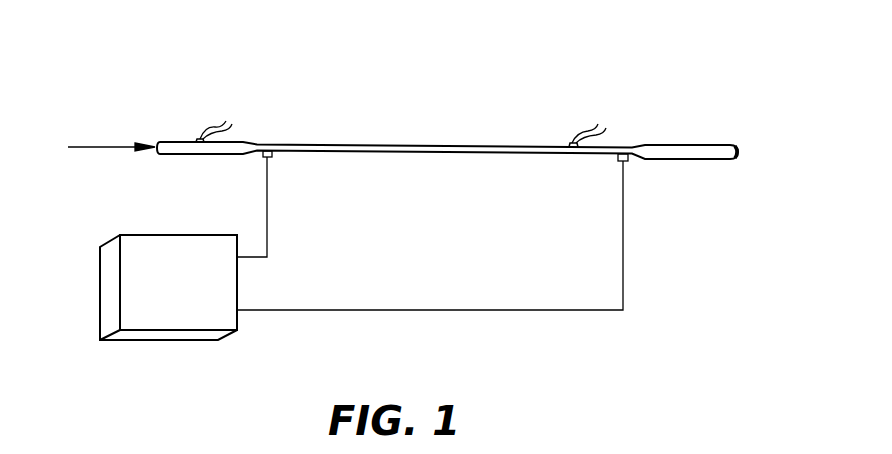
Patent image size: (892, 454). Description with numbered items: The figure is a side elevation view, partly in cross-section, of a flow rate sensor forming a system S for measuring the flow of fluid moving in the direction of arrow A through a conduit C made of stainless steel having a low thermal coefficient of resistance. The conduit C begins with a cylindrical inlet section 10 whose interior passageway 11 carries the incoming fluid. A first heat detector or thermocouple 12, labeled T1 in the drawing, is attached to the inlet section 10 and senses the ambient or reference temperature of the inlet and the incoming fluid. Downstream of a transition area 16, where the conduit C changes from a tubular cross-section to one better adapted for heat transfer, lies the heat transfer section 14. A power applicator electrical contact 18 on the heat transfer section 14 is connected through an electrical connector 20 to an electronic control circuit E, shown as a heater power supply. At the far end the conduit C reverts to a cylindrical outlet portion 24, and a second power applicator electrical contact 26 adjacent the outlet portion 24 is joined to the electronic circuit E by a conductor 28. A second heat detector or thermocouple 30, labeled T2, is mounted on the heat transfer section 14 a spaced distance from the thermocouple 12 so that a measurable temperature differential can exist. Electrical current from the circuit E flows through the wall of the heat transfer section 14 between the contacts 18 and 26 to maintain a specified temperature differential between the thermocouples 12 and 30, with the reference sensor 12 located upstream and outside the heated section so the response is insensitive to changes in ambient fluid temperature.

The inlet section 10 is at (170, 142).
The interior passageway 11 is at (155, 155).
The first heat detector or thermocouple 12 is at (196, 140).
The heat transfer section 14 is at (403, 144).
The transition area 16 is at (255, 143).
The power applicator electrical contact 18 is at (272, 158).
The electrical connector 20 is at (267, 198).
The cylindrical outlet portion 24 is at (690, 146).
The power applicator electrical contact 26 is at (628, 162).
The conductor 28 is at (533, 310).
The second heat detector or thermocouple 30 is at (569, 146).
The inlet temperature sensor T1 is at (211, 122).
The outlet temperature sensor T2 is at (585, 128).
The arrow indicating direction of fluid flow A is at (84, 152).
The conduit C is at (236, 166).
The electronic control circuit E is at (107, 345).
The system S is at (472, 83).